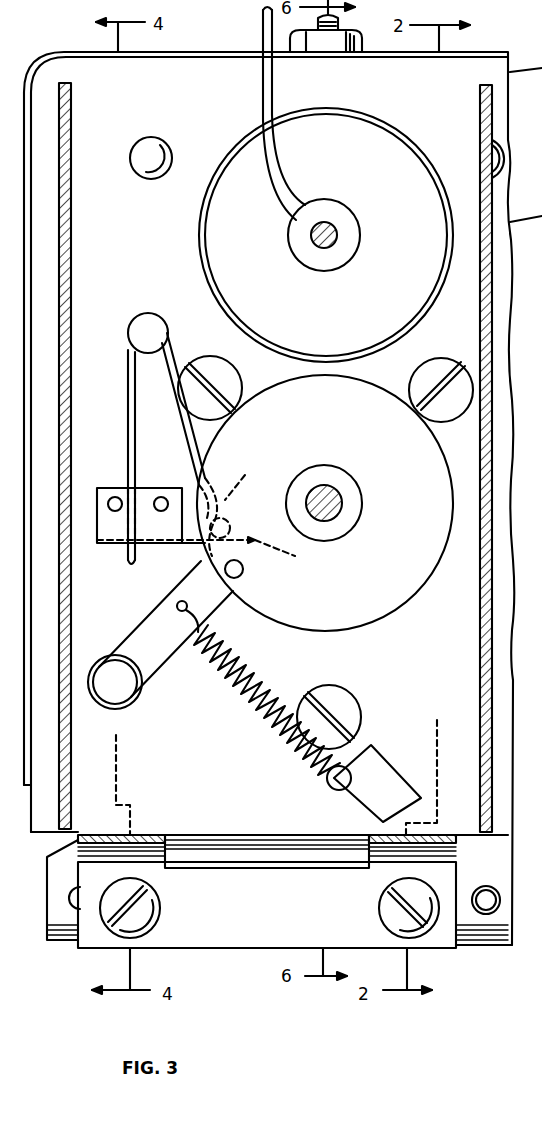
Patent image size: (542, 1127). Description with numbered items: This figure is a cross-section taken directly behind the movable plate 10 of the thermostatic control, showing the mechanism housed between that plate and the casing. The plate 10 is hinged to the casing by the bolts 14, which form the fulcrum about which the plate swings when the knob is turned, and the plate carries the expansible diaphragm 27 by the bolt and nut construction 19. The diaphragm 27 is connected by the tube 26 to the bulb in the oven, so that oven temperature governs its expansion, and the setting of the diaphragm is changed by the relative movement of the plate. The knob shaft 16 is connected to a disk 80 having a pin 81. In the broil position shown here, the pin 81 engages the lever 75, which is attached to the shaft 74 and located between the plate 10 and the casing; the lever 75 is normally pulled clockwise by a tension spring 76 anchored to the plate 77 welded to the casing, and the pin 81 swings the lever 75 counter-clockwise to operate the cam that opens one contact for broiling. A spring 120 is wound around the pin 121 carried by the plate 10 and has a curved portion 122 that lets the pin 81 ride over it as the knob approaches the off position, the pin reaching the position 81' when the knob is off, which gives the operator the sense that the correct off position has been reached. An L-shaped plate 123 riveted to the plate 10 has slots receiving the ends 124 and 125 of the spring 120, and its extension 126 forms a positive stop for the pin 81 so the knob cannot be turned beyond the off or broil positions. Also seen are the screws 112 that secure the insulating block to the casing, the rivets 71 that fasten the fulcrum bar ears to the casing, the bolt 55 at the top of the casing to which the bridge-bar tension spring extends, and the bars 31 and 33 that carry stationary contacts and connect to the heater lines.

The movable plate 10 is at (68, 258).
The bolts 14 is at (148, 907).
The shaft 16 is at (340, 500).
The bolt and nut construction 19 is at (338, 232).
The tube 26 is at (262, 88).
The expansible diaphragm 27 is at (210, 214).
The bar 31 is at (490, 926).
The bar 33 is at (52, 885).
The bolt 55 is at (340, 19).
The rivets 71 is at (152, 148).
The shaft 74 is at (120, 692).
The lever 75 is at (152, 660).
The tension spring 76 is at (250, 656).
The plate 77 is at (378, 775).
The disk 80 is at (365, 616).
The pin 81 is at (255, 575).
The pin position 81' is at (243, 518).
The screws 112 is at (216, 372).
The spring 120 is at (188, 452).
The pin 121 is at (147, 322).
The curved portion 122 is at (245, 482).
The L-shaped plate 123 is at (108, 497).
The spring end 124 is at (130, 562).
The spring end 125 is at (207, 556).
The extension 126 is at (213, 553).